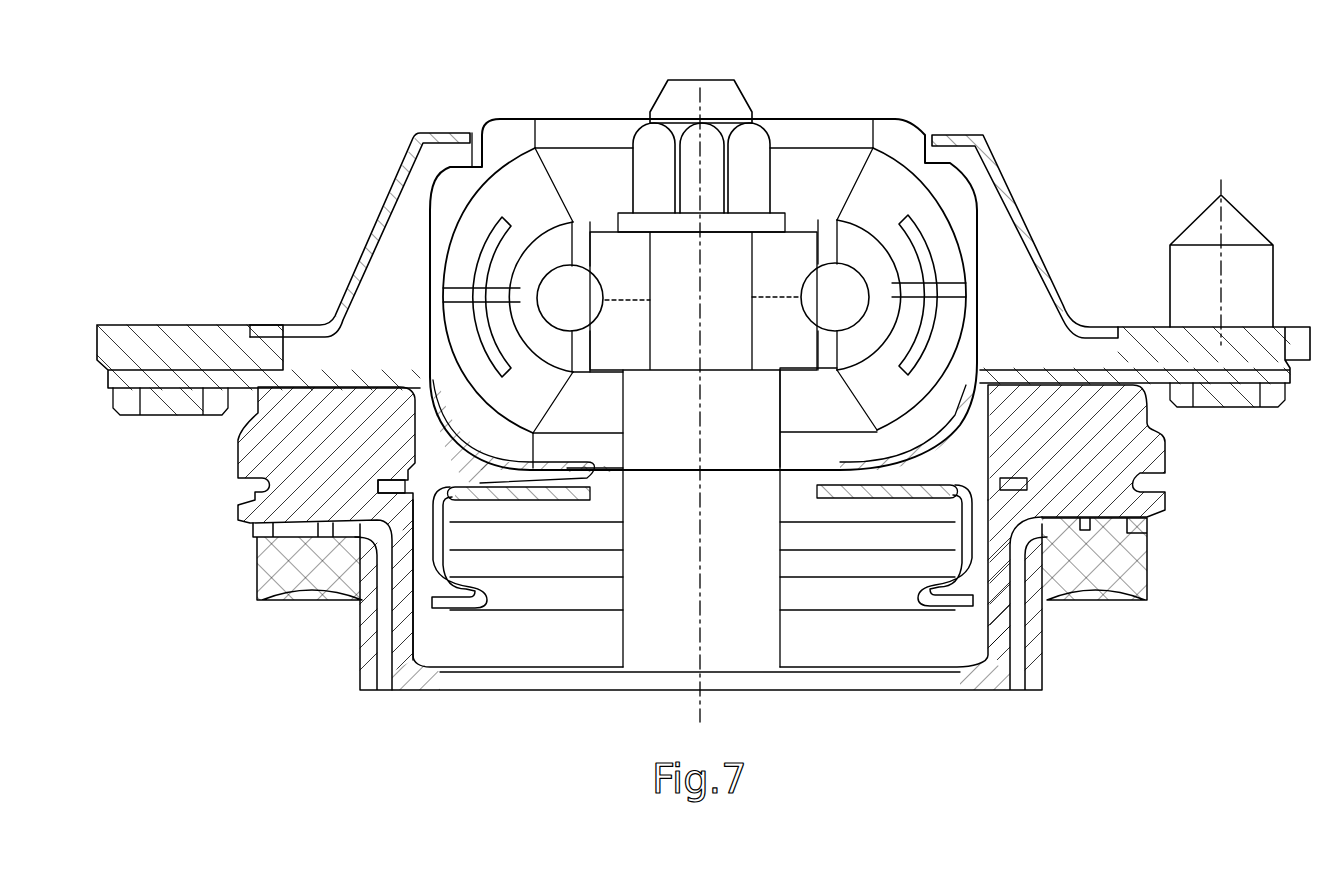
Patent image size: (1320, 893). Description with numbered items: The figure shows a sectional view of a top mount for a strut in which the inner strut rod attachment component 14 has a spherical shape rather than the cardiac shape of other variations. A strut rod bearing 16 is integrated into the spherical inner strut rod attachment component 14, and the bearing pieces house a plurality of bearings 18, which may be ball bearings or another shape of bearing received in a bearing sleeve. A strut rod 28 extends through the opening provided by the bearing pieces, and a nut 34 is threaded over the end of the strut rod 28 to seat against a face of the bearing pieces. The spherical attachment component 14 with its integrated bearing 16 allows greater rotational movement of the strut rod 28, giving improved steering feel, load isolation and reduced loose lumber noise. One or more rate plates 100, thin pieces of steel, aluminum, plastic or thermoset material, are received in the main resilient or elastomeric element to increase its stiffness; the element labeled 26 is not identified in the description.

The inner strut rod attachment component 14 is at (547, 253).
The strut rod bearing 16 is at (803, 248).
The bearings 18 is at (578, 314).
The housing shell 26 is at (897, 157).
The strut rod 28 is at (718, 80).
The nut 34 is at (640, 134).
The rate plates 100 is at (447, 267).